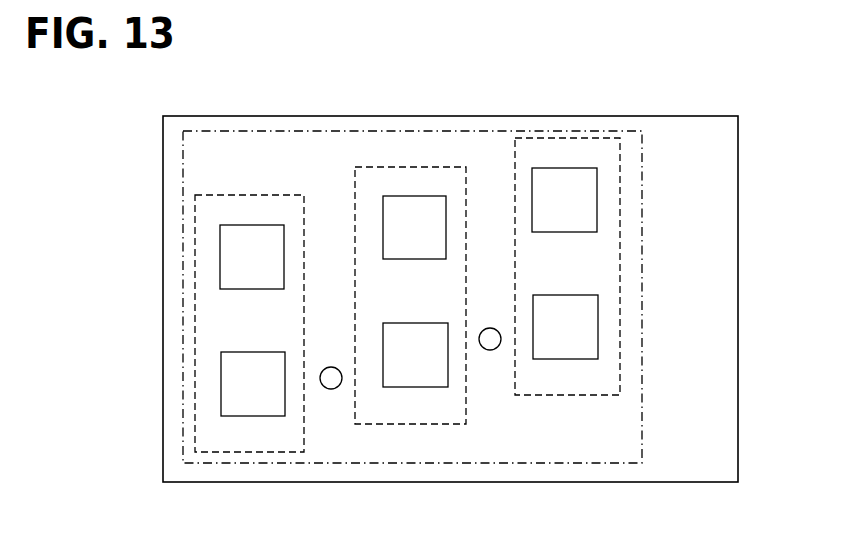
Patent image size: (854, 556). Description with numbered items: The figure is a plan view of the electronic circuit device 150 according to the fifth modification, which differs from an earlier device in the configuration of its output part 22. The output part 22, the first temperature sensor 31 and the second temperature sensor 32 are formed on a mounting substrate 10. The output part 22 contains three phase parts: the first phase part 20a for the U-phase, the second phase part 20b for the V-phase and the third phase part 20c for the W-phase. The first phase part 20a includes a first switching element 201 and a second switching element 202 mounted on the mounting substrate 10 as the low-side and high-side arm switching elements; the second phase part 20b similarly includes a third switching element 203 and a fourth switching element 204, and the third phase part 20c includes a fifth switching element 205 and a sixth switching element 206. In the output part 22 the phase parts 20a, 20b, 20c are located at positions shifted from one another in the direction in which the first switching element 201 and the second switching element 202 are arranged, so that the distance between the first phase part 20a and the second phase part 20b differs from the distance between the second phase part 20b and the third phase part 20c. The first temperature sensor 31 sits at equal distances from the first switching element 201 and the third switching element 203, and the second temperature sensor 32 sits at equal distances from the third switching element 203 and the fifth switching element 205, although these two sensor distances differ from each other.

The mounting substrate 10 is at (680, 465).
The electronic circuit device 150 is at (745, 92).
The output part 22 is at (642, 310).
The first phase part 20a is at (210, 195).
The second phase part 20b is at (372, 167).
The third phase part 20c is at (534, 138).
The first switching element 201 is at (245, 416).
The second switching element 202 is at (270, 225).
The third switching element 203 is at (400, 387).
The fourth switching element 204 is at (426, 196).
The fifth switching element 205 is at (565, 359).
The sixth switching element 206 is at (581, 168).
The first temperature sensor 31 is at (331, 389).
The second temperature sensor 32 is at (490, 350).